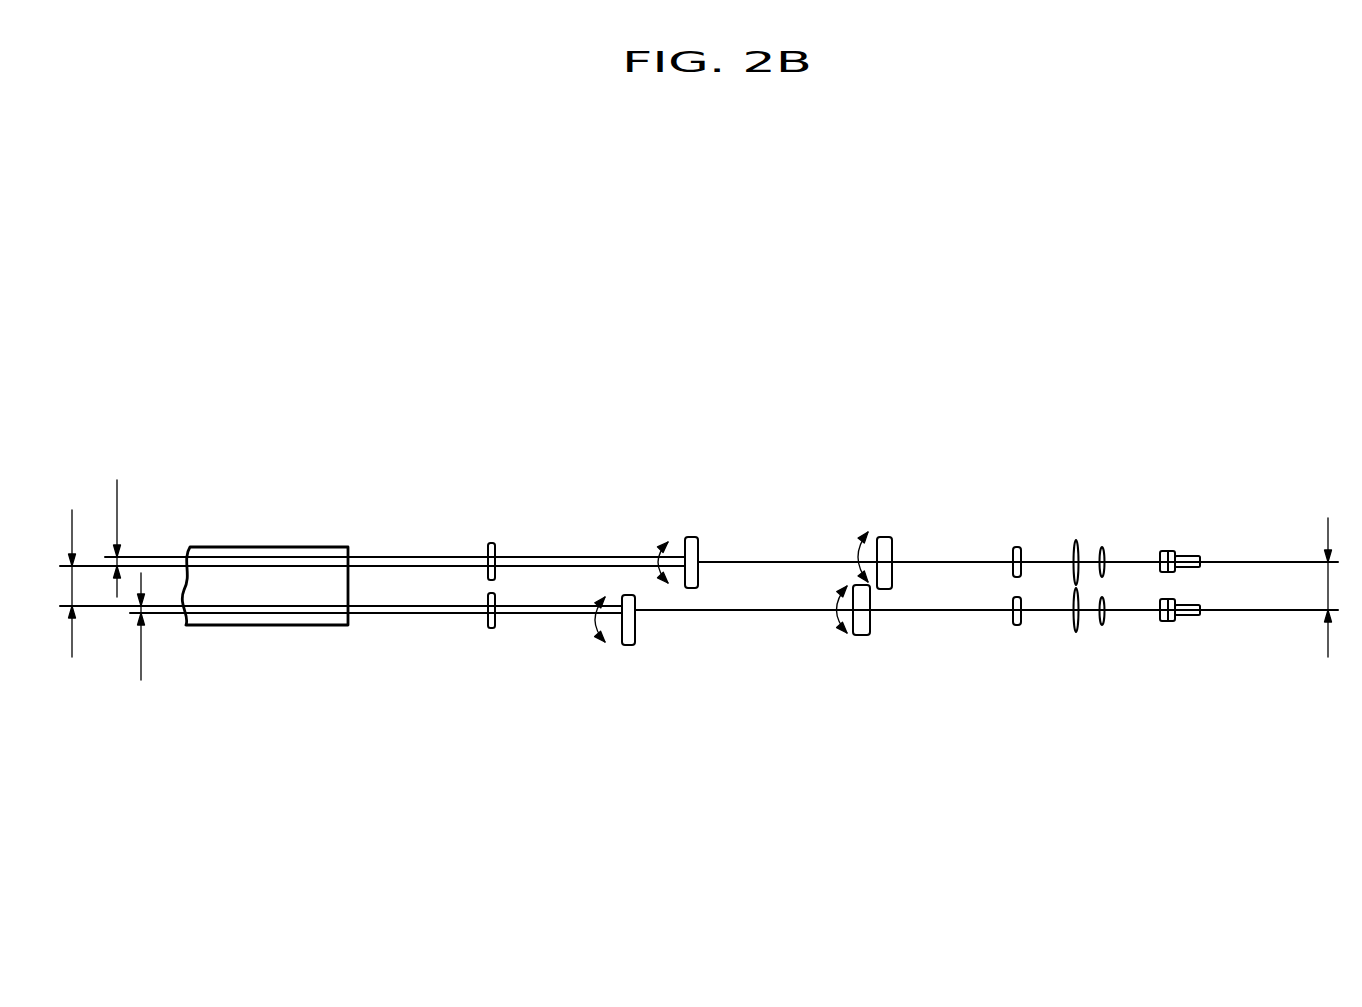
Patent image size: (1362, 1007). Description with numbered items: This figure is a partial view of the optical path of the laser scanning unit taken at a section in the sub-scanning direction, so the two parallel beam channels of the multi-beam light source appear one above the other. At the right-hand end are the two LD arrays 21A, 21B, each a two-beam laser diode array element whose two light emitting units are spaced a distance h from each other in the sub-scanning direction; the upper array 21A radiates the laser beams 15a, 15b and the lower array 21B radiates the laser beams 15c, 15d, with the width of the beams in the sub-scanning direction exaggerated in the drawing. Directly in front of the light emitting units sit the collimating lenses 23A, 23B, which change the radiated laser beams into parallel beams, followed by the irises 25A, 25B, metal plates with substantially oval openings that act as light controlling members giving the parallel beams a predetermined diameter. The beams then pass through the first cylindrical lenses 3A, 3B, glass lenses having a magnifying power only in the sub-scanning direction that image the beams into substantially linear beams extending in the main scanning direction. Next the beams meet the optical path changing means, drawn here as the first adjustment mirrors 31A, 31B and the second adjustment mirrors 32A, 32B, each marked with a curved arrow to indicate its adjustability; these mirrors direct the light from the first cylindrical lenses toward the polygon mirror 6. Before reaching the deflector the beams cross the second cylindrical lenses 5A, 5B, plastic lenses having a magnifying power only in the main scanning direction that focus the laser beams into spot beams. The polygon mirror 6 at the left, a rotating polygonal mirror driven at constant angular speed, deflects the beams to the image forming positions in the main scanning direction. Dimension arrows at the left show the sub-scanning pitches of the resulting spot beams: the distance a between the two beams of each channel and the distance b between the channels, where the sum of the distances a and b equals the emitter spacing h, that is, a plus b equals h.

The polygon mirror 6 is at (262, 547).
The laser beam 15a is at (540, 558).
The laser beam 15b is at (432, 613).
The laser beam 15c is at (387, 613).
The laser beam 15d is at (437, 558).
The second cylindrical lens 5A is at (490, 543).
The second cylindrical lens 5B is at (493, 628).
The second adjustment mirror 32A is at (692, 537).
The second adjustment mirror 32B is at (630, 645).
The first adjustment mirror 31A is at (885, 537).
The first adjustment mirror 31B is at (862, 635).
The first cylindrical lens 3A is at (1015, 547).
The first cylindrical lens 3B is at (1017, 625).
The iris 25A is at (1075, 540).
The iris 25B is at (1075, 632).
The collimating lens 23A is at (1102, 547).
The collimating lens 23B is at (1102, 625).
The LD array 21A is at (1187, 555).
The LD array 21B is at (1187, 615).
The pitch distance a is at (118, 580).
The pitch distance b is at (61, 583).
The light emitting unit spacing distance h is at (1339, 587).